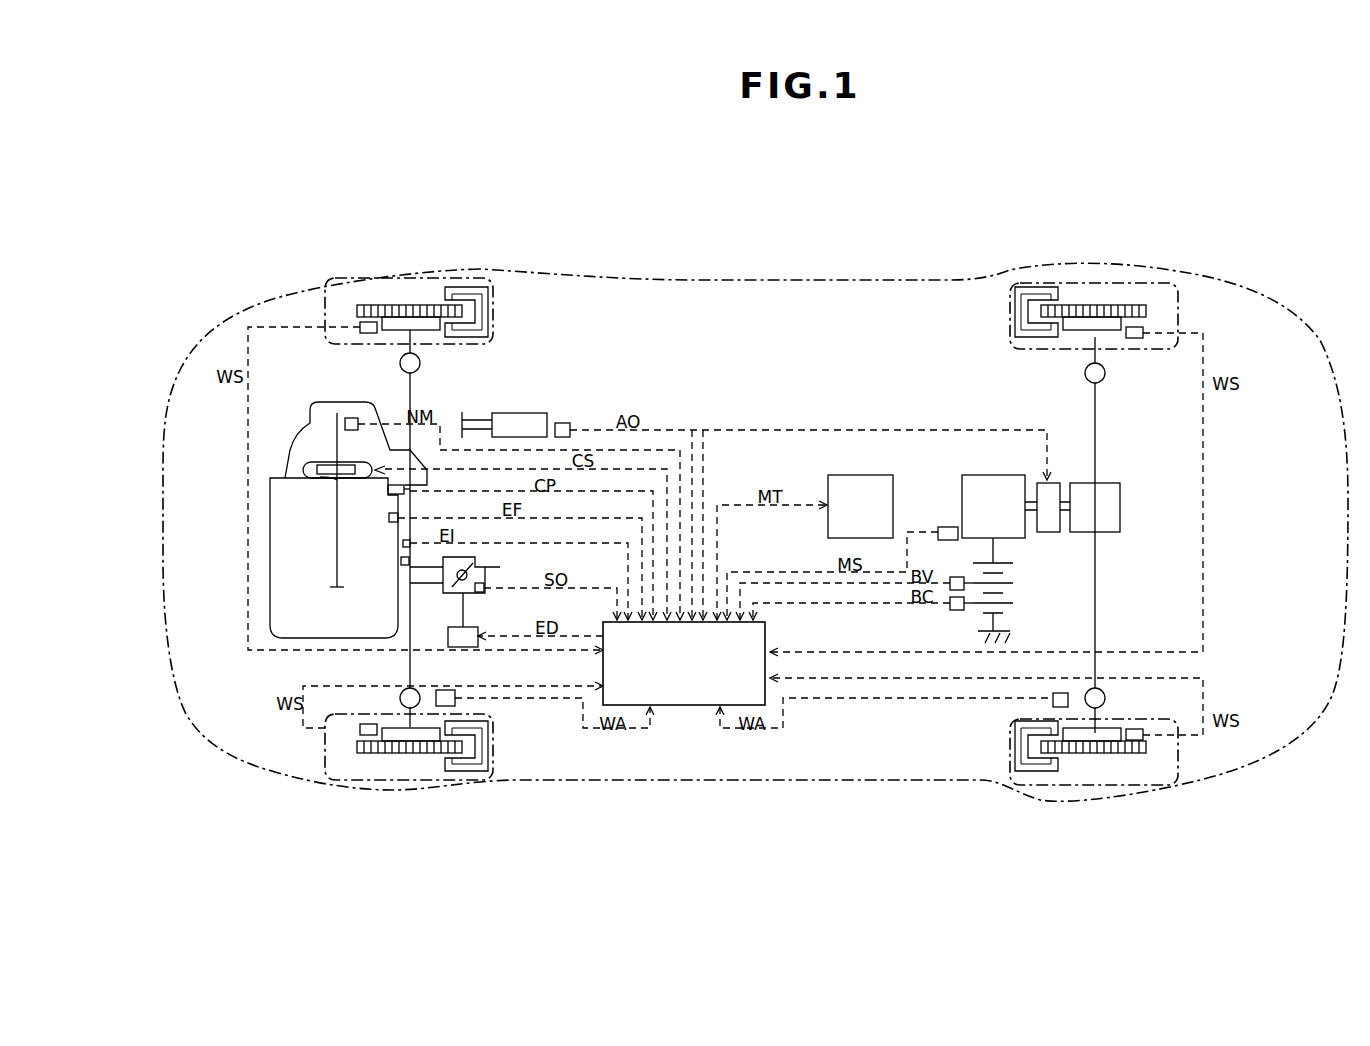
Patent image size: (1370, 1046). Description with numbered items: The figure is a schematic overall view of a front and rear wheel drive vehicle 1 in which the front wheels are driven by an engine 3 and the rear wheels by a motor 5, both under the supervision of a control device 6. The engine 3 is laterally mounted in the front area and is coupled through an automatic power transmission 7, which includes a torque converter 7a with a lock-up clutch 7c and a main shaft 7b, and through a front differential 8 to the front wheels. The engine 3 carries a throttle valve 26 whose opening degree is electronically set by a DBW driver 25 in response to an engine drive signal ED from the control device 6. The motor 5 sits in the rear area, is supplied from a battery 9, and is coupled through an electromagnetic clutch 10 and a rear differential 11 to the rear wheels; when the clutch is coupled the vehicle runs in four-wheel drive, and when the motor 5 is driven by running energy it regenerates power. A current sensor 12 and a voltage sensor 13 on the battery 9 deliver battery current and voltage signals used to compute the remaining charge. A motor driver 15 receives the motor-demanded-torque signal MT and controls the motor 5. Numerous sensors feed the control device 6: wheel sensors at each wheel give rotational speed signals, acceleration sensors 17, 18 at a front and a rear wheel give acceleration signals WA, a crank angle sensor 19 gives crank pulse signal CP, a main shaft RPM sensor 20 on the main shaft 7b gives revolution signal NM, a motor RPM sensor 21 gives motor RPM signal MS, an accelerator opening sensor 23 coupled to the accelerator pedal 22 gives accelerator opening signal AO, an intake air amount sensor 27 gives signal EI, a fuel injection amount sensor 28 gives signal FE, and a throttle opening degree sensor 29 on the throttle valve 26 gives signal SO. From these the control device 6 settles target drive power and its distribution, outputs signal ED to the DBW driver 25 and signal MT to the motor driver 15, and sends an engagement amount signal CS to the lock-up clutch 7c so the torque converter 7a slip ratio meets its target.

The front and rear wheel drive vehicle 1 is at (893, 195).
The engine 3 is at (283, 587).
The motor 5 is at (993, 477).
The control device 6 is at (755, 695).
The automatic power transmission 7 is at (340, 407).
The torque converter 7a is at (303, 468).
The main shaft 7b is at (337, 450).
The lock-up clutch 7c is at (320, 477).
The front differential 8 is at (410, 488).
The battery 9 is at (1010, 605).
The electromagnetic clutch 10 is at (1047, 533).
The rear differential 11 is at (1100, 517).
The current sensor 12 is at (957, 610).
The voltage sensor 13 is at (950, 590).
The motor driver 15 is at (832, 475).
The acceleration sensor 17 is at (447, 706).
The acceleration sensor 18 is at (1055, 707).
The crank angle sensor 19 is at (390, 513).
The main shaft RPM sensor 20 is at (350, 418).
The motor RPM sensor 21 is at (938, 528).
The accelerator pedal 22 is at (519, 420).
The accelerator opening sensor 23 is at (565, 423).
The DBW driver 25 is at (478, 627).
The throttle valve 26 is at (478, 562).
The intake air amount sensor 27 is at (400, 565).
The fuel injection amount sensor 28 is at (337, 590).
The throttle opening degree sensor 29 is at (470, 594).